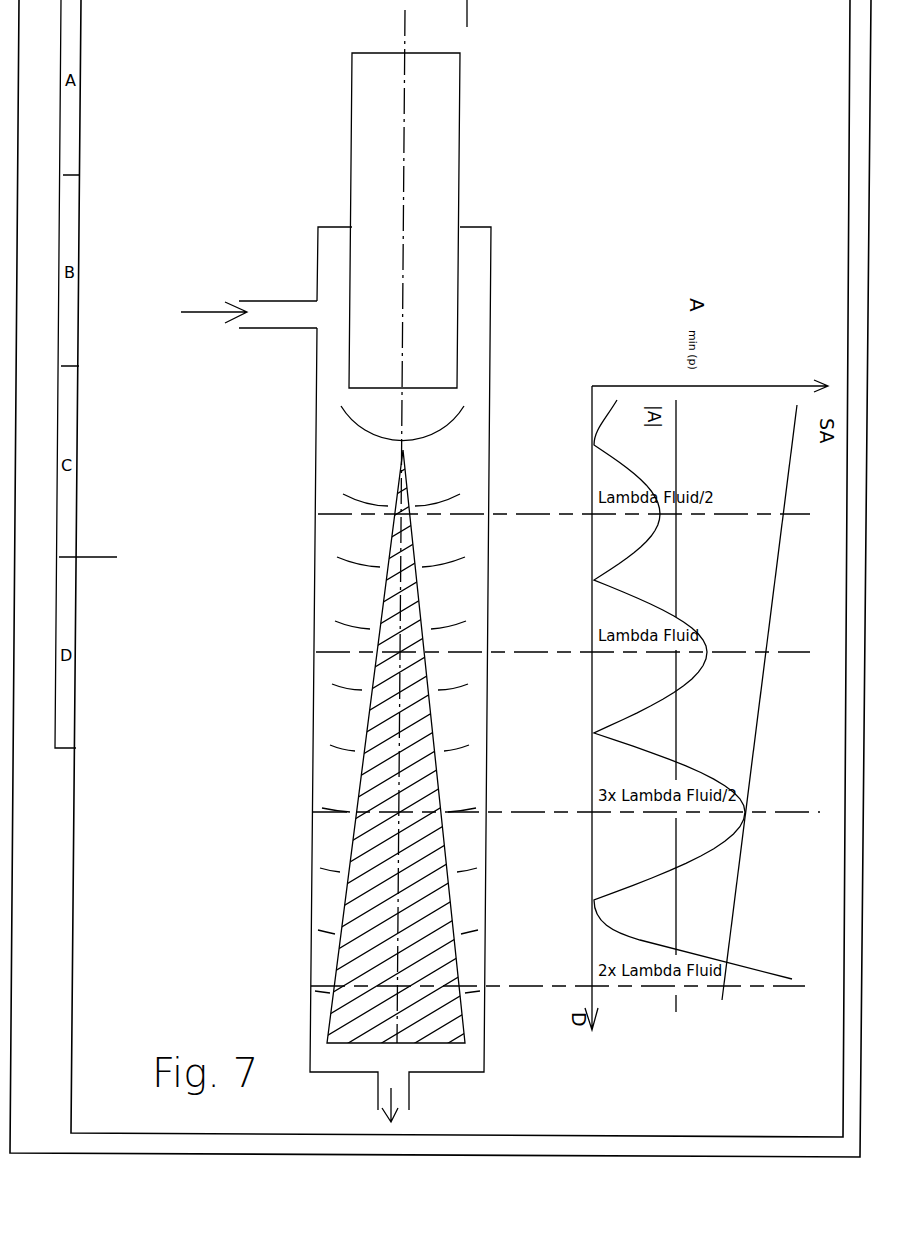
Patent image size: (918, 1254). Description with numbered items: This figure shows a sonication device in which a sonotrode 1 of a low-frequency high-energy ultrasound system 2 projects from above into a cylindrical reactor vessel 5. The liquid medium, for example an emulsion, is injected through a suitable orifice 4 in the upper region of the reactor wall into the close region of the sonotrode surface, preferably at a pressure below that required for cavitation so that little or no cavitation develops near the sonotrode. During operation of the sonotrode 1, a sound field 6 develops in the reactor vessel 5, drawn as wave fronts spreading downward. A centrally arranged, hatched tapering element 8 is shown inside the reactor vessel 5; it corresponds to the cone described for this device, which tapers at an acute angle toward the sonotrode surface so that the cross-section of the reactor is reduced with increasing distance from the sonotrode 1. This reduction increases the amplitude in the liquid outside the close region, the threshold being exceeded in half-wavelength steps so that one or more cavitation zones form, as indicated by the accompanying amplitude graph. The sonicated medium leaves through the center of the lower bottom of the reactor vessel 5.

The sonotrode 1 is at (458, 192).
The low-frequency high-energy ultrasound system 2 is at (418, 388).
The orifice 4 is at (258, 301).
The reactor vessel 5 is at (489, 325).
The sound field 6 is at (343, 495).
The focal zone 8 is at (367, 888).